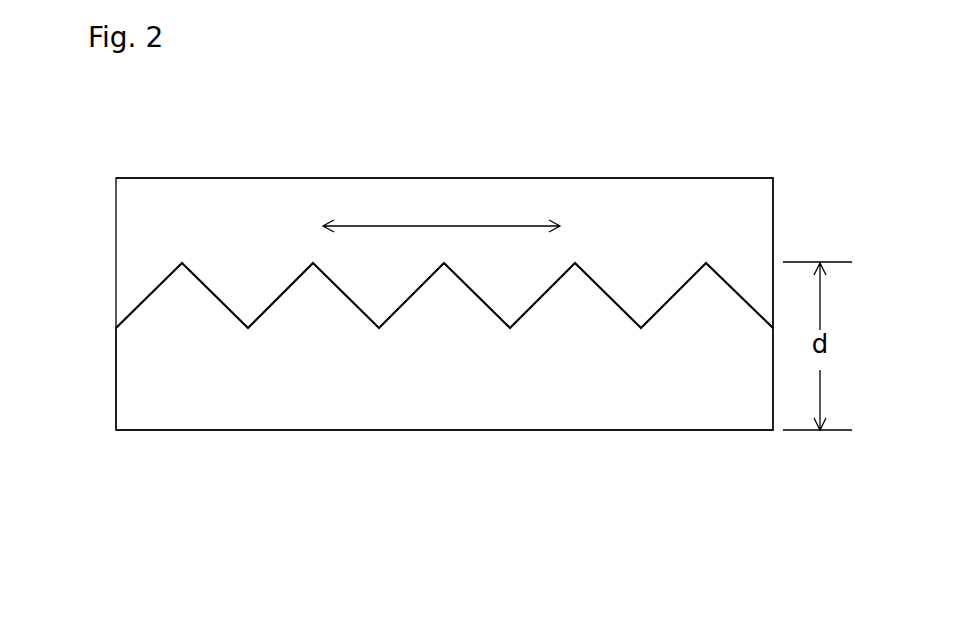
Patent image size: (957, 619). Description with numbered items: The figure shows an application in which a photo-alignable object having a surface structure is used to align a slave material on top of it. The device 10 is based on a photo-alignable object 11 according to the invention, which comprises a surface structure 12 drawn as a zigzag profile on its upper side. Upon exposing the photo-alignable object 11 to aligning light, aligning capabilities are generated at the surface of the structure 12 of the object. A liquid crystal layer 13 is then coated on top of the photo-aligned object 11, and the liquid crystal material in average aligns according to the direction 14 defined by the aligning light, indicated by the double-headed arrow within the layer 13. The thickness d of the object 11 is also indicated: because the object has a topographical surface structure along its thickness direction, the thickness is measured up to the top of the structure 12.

The device 10 is at (103, 178).
The photo-alignable object 11 is at (659, 402).
The surface structure 12 is at (476, 300).
The liquid crystal layer 13 is at (732, 224).
The direction 14 is at (463, 214).